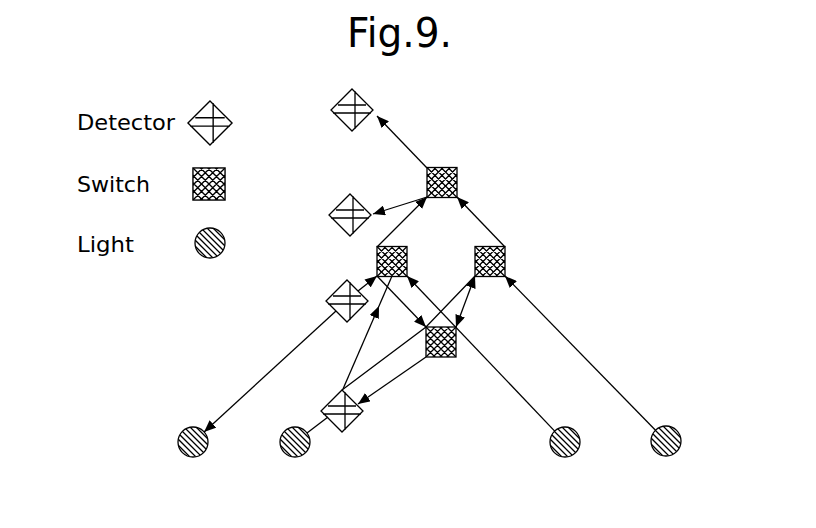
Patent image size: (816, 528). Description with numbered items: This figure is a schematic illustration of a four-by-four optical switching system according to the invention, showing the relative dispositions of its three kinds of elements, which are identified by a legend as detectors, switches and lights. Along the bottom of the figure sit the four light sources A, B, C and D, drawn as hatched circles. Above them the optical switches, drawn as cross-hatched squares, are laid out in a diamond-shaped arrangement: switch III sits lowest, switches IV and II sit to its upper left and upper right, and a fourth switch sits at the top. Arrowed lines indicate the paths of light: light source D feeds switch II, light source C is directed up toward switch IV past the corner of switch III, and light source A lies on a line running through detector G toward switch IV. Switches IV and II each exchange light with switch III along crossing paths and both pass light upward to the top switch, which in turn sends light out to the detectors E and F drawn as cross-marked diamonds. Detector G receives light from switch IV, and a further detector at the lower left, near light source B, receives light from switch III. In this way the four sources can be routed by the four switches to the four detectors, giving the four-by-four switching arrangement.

The light source A is at (193, 448).
The light source B is at (295, 448).
The light source C is at (565, 448).
The light source D is at (666, 448).
The detector E is at (338, 100).
The detector F is at (338, 209).
The detector G is at (333, 288).
The optical switch II is at (506, 260).
The optical switch III is at (445, 357).
The optical switch IV is at (395, 248).